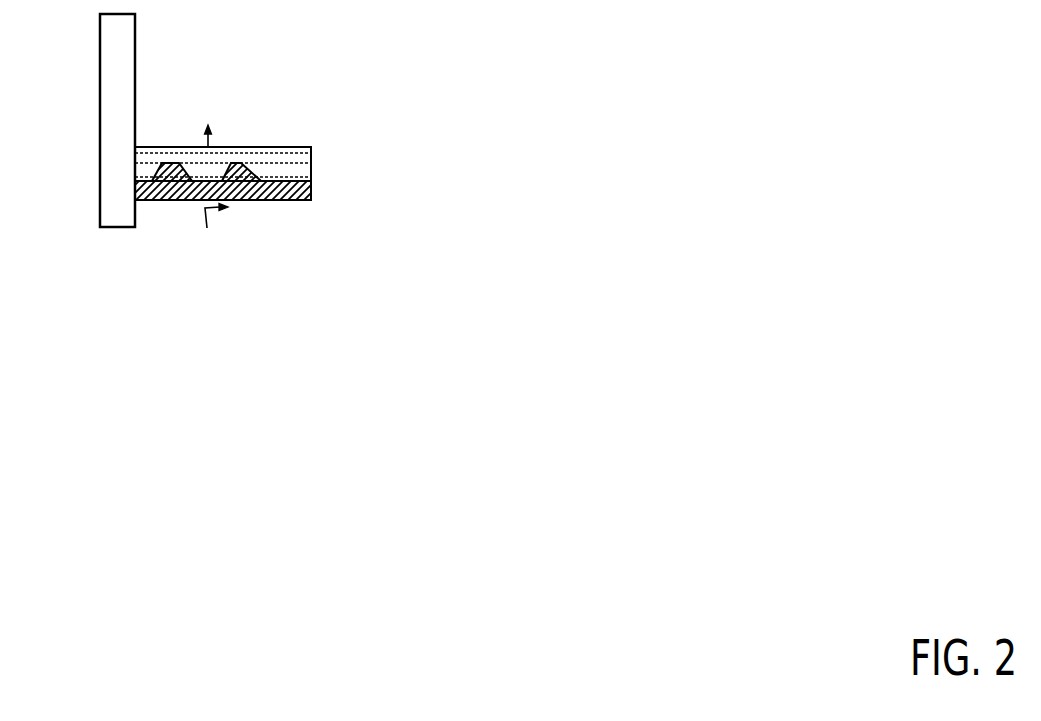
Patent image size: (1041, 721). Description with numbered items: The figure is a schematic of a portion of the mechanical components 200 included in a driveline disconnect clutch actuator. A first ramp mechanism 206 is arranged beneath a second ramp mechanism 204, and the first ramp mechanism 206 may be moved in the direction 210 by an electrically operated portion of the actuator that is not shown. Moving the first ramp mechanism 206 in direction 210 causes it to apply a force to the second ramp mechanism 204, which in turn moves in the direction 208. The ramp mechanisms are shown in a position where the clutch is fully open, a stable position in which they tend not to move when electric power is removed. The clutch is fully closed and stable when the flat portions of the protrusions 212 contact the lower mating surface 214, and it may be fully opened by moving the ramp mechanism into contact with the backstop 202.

The mechanical components 200 is at (246, 82).
The backstop 202 is at (100, 67).
The second ramp mechanism 204 is at (312, 162).
The first ramp mechanism 206 is at (312, 190).
The direction of second ramp mechanism movement 208 is at (209, 140).
The direction of first ramp mechanism movement 210 is at (206, 229).
The protrusions 212 is at (239, 172).
The lower mating surface 214 is at (296, 175).